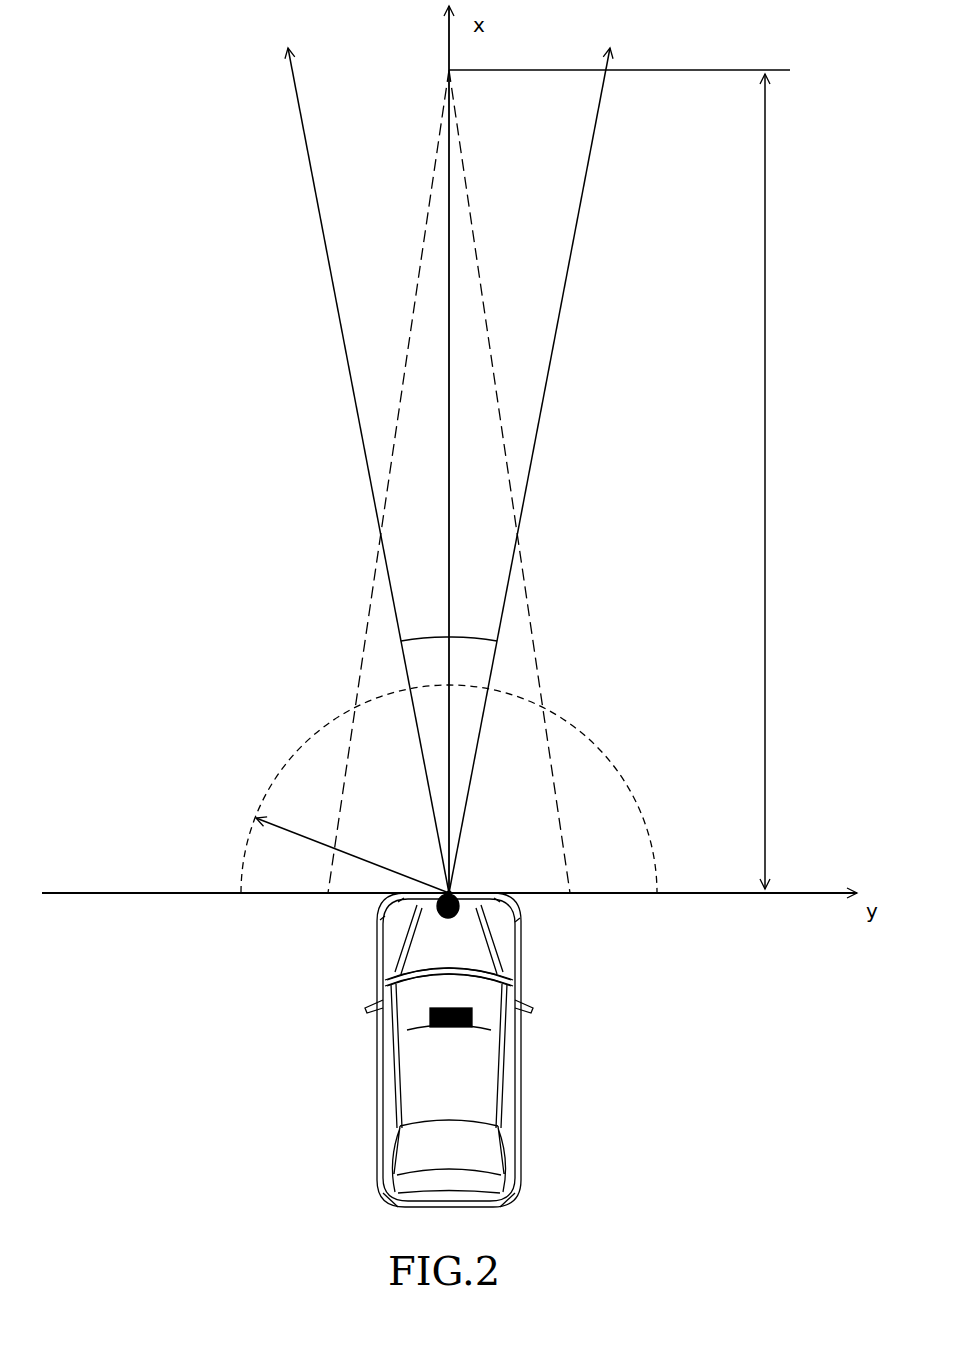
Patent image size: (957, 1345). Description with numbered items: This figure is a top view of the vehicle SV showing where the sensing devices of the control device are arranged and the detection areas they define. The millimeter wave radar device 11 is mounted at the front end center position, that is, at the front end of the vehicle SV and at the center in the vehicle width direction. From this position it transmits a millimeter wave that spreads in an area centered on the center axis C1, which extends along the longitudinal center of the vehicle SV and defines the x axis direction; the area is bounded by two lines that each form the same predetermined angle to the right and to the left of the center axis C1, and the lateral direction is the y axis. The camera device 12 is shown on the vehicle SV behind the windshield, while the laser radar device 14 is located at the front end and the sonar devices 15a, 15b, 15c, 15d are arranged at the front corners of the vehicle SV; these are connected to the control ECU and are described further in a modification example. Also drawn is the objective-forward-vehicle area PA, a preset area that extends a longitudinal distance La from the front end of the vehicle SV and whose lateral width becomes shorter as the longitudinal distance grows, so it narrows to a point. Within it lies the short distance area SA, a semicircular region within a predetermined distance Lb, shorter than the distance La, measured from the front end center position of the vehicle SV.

The millimeter wave radar device 11 is at (449, 915).
The camera device 12 is at (455, 1028).
The laser radar device 14 is at (452, 890).
The sonar device 15a is at (380, 921).
The sonar device 15b is at (400, 903).
The sonar device 15c is at (500, 901).
The sonar device 15d is at (515, 922).
The vehicle SV is at (523, 1030).
The objective-forward-vehicle area PA is at (484, 283).
The short distance area SA is at (556, 722).
The center axis C1 is at (451, 533).
The longitudinal distance La is at (626, 479).
The predetermined distance Lb is at (352, 851).